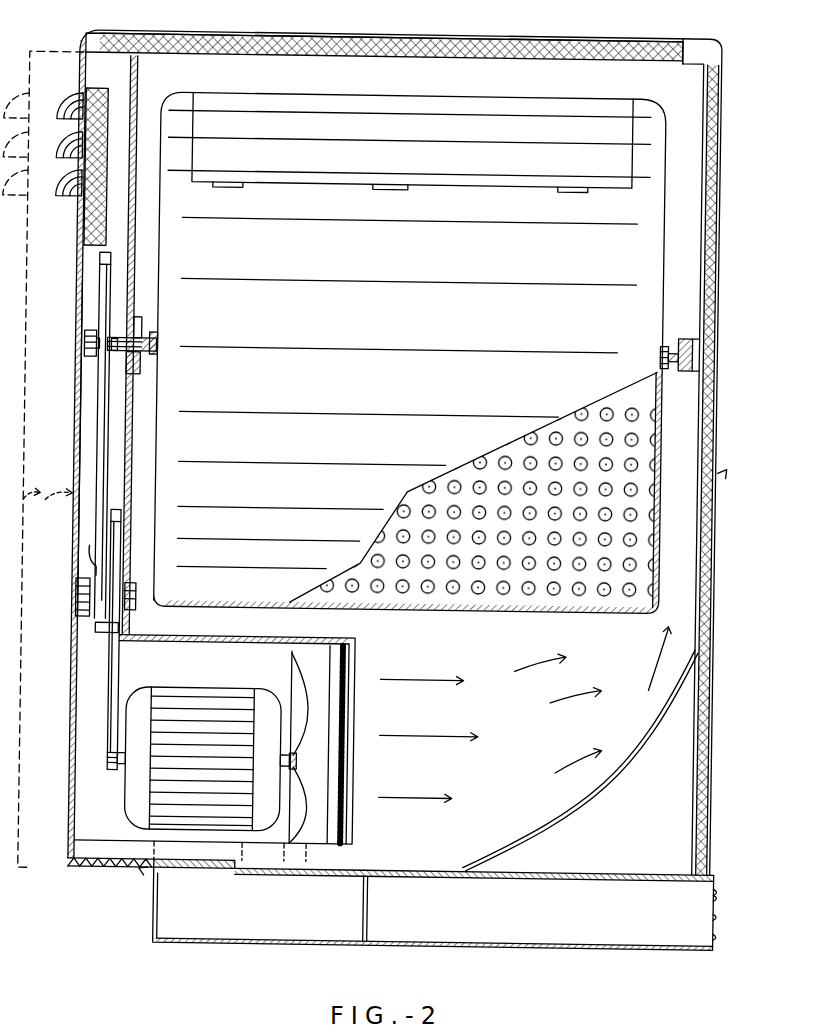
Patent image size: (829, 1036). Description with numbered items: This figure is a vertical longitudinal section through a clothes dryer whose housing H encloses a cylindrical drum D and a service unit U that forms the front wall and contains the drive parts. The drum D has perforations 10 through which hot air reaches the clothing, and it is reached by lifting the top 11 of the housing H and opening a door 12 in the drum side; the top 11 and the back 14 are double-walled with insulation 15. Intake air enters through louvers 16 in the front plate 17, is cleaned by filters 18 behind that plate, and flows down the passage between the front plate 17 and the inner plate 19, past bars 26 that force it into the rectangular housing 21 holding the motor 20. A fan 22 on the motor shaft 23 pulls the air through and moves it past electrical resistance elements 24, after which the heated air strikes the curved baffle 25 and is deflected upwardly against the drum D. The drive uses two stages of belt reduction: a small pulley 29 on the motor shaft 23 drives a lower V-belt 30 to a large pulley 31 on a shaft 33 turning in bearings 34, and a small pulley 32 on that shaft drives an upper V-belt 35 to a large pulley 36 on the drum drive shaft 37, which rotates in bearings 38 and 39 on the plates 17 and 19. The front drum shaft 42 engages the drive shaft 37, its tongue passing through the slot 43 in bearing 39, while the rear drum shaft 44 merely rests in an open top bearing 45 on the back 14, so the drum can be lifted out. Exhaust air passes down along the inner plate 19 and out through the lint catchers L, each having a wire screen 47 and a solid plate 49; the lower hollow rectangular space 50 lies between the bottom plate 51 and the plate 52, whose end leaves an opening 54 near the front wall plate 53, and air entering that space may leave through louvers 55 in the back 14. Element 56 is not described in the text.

The perforations 10 is at (637, 452).
The top 11 is at (530, 34).
The door 12 is at (557, 101).
The back 14 is at (722, 264).
The insulation 15 is at (316, 33).
The louvers 16 is at (70, 193).
The front plate 17 is at (84, 273).
The filters 18 is at (84, 124).
The inner plate 19 is at (140, 472).
The motor 20 is at (180, 688).
The rectangular housing 21 is at (132, 840).
The fan 22 is at (296, 668).
The motor shaft 23 is at (307, 758).
The electrical resistance elements 24 is at (356, 722).
The curved baffle 25 is at (618, 773).
The bars 26 is at (90, 298).
The small pulley 29 is at (118, 766).
The lower V-belt 30 is at (118, 698).
The large pulley 31 is at (129, 668).
The small pulley 32 is at (96, 560).
The shaft 33 is at (112, 632).
The bearings 34 is at (84, 596).
The upper V-belt 35 is at (103, 460).
The large pulley 36 is at (103, 404).
The drum drive shaft 37 is at (141, 375).
The bearing 38 is at (89, 346).
The bearing 39 is at (160, 355).
The front drum shaft 42 is at (160, 340).
The slot 43 is at (144, 318).
The rear drum shaft 44 is at (670, 338).
The open top bearing 45 is at (692, 364).
The wire screen 47 is at (114, 872).
The solid plate 49 is at (200, 872).
The hollow rectangular space 50 is at (553, 915).
The bottom plate 51 is at (450, 945).
The plate 52 is at (418, 874).
The front wall plate 53 is at (171, 918).
The opening 54 is at (240, 873).
The louvers 55 is at (730, 895).
The base partition 56 is at (382, 912).
The drum D is at (471, 313).
The housing H is at (724, 464).
The lint catchers L is at (160, 866).
The service unit U is at (47, 500).